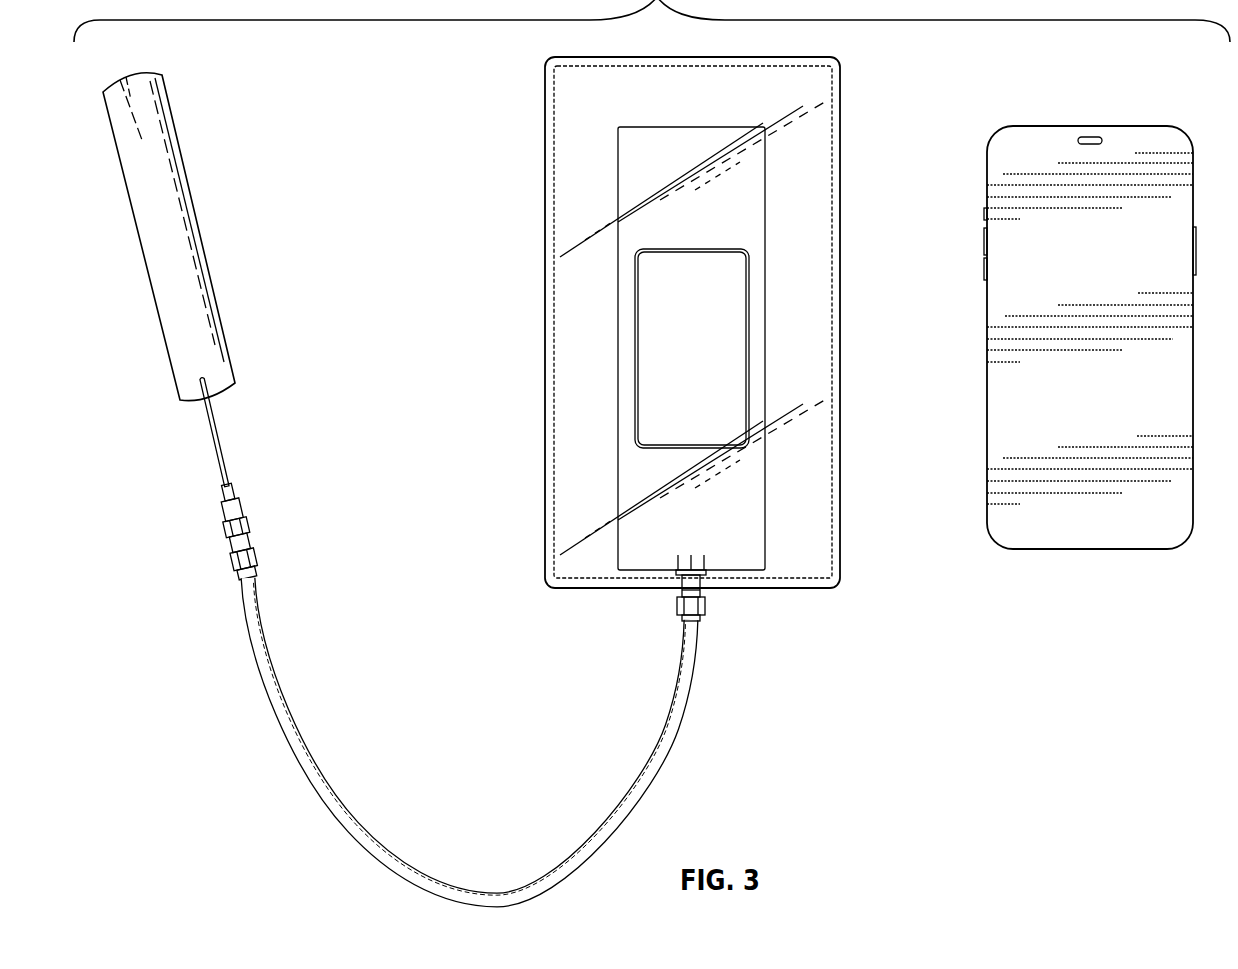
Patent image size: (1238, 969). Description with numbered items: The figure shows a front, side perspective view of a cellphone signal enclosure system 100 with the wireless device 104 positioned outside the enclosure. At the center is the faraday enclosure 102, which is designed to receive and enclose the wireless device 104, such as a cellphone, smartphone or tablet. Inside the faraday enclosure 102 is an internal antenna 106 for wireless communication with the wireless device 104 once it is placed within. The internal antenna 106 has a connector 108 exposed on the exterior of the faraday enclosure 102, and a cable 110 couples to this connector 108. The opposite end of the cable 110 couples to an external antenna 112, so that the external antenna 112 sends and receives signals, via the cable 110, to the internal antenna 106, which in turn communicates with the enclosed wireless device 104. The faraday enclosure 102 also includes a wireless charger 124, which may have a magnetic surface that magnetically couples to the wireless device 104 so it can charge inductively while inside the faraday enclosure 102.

The cellphone signal enclosure system 100 is at (406, 76).
The faraday enclosure 102 is at (815, 162).
The wireless device 104 is at (1103, 530).
The internal antenna 106 is at (648, 562).
The connector 108 is at (704, 604).
The cable 110 is at (280, 676).
The external antenna 112 is at (186, 203).
The wireless charger 124 is at (663, 337).